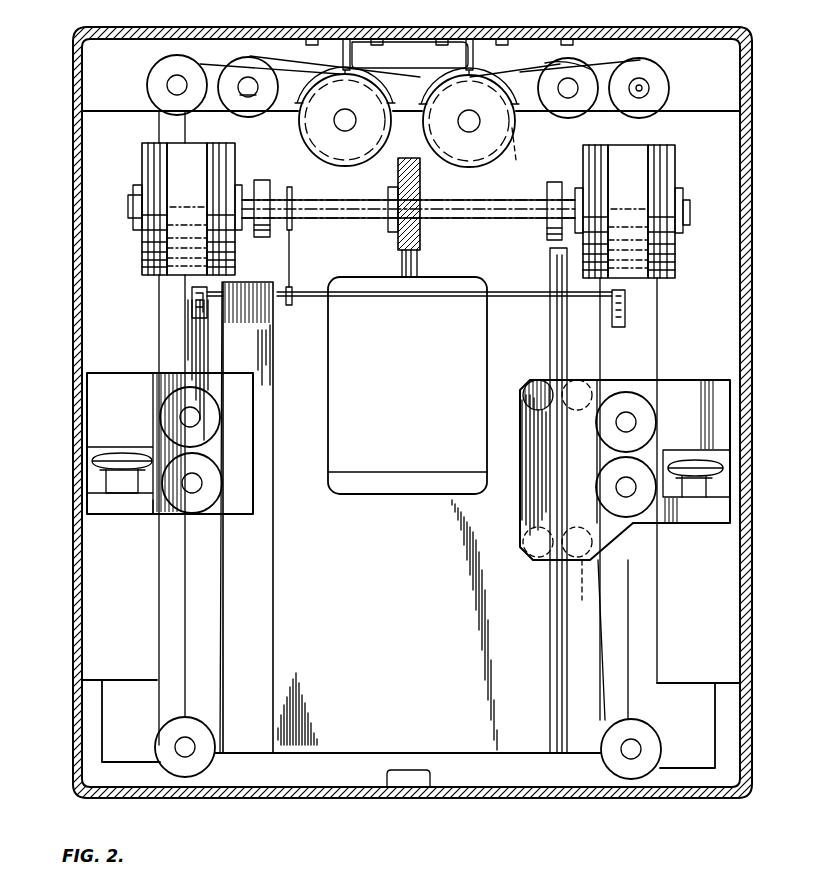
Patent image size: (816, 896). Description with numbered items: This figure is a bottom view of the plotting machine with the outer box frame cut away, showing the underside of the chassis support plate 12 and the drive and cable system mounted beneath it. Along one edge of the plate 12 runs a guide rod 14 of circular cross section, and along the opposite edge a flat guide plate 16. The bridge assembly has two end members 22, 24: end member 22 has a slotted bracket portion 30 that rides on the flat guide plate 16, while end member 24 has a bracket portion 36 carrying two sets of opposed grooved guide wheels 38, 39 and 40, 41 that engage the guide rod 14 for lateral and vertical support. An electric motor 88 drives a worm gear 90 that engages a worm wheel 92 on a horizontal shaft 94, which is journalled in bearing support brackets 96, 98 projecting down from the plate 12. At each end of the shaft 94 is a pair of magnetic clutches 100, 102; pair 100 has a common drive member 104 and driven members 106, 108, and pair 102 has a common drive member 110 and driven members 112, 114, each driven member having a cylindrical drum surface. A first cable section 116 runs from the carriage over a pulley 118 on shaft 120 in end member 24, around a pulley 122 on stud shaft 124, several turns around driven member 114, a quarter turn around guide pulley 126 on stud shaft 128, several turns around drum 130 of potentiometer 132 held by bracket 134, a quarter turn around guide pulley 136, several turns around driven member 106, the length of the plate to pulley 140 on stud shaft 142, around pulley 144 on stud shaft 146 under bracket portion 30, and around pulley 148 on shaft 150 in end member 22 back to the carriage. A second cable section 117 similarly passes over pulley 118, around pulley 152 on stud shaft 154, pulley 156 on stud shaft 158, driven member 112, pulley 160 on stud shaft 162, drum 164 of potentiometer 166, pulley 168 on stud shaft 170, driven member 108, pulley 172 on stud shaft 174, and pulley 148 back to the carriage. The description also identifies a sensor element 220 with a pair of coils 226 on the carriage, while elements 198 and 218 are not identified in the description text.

The chassis support plate 12 is at (440, 646).
The guide rod 14 is at (548, 632).
The flat guide plate 16 is at (275, 640).
The end member 22 is at (168, 448).
The end member 24 is at (667, 430).
The bracket portion 30 is at (162, 518).
The bracket portion 36 is at (603, 562).
The grooved guide wheel 38 is at (601, 532).
The grooved guide wheel 39 is at (557, 563).
The grooved guide wheel 40 is at (525, 388).
The grooved guide wheel 41 is at (577, 380).
The electric motor 88 is at (382, 497).
The worm gear 90 is at (420, 256).
The worm wheel 92 is at (397, 170).
The horizontal shaft 94 is at (483, 220).
The bearing support bracket 96 is at (262, 180).
The bearing support bracket 98 is at (556, 182).
The pair of magnetic clutches 100 is at (186, 211).
The pair of magnetic clutches 102 is at (647, 210).
The common drive member 104 is at (180, 270).
The driven member 106 is at (142, 156).
The driven member 108 is at (228, 148).
The common drive member 110 is at (640, 285).
The driven member 112 is at (645, 147).
The driven member 114 is at (580, 150).
The first cable section 116 is at (158, 600).
The second cable section 117 is at (318, 70).
The pulley 118 is at (720, 483).
The shaft 120 is at (712, 505).
The pulley 122 is at (636, 412).
The stud shaft 124 is at (616, 422).
The guide pulley 126 is at (578, 66).
The stud shaft 128 is at (568, 84).
The drum 130 is at (356, 162).
The potentiometer 132 is at (305, 140).
The bracket 134 is at (360, 57).
The guide pulley 136 is at (148, 68).
The pulley 140 is at (203, 762).
The stud shaft 142 is at (180, 745).
The pulley 144 is at (207, 470).
The stud shaft 146 is at (196, 483).
The pulley 148 is at (104, 480).
The shaft 150 is at (110, 461).
The pulley 152 is at (615, 468).
The stud shaft 154 is at (616, 487).
The pulley 156 is at (615, 760).
The stud shaft 158 is at (640, 748).
The pulley 160 is at (646, 70).
The stud shaft 162 is at (642, 88).
The drum 164 is at (514, 160).
The potentiometer 166 is at (488, 165).
The pulley 168 is at (250, 82).
The stud shaft 170 is at (248, 74).
The pulley 172 is at (176, 412).
The stud shaft 174 is at (186, 417).
The pulley 198 is at (180, 82).
The bracket 218 is at (190, 300).
The sensor element 220 is at (625, 324).
The pair of coils 226 is at (292, 280).